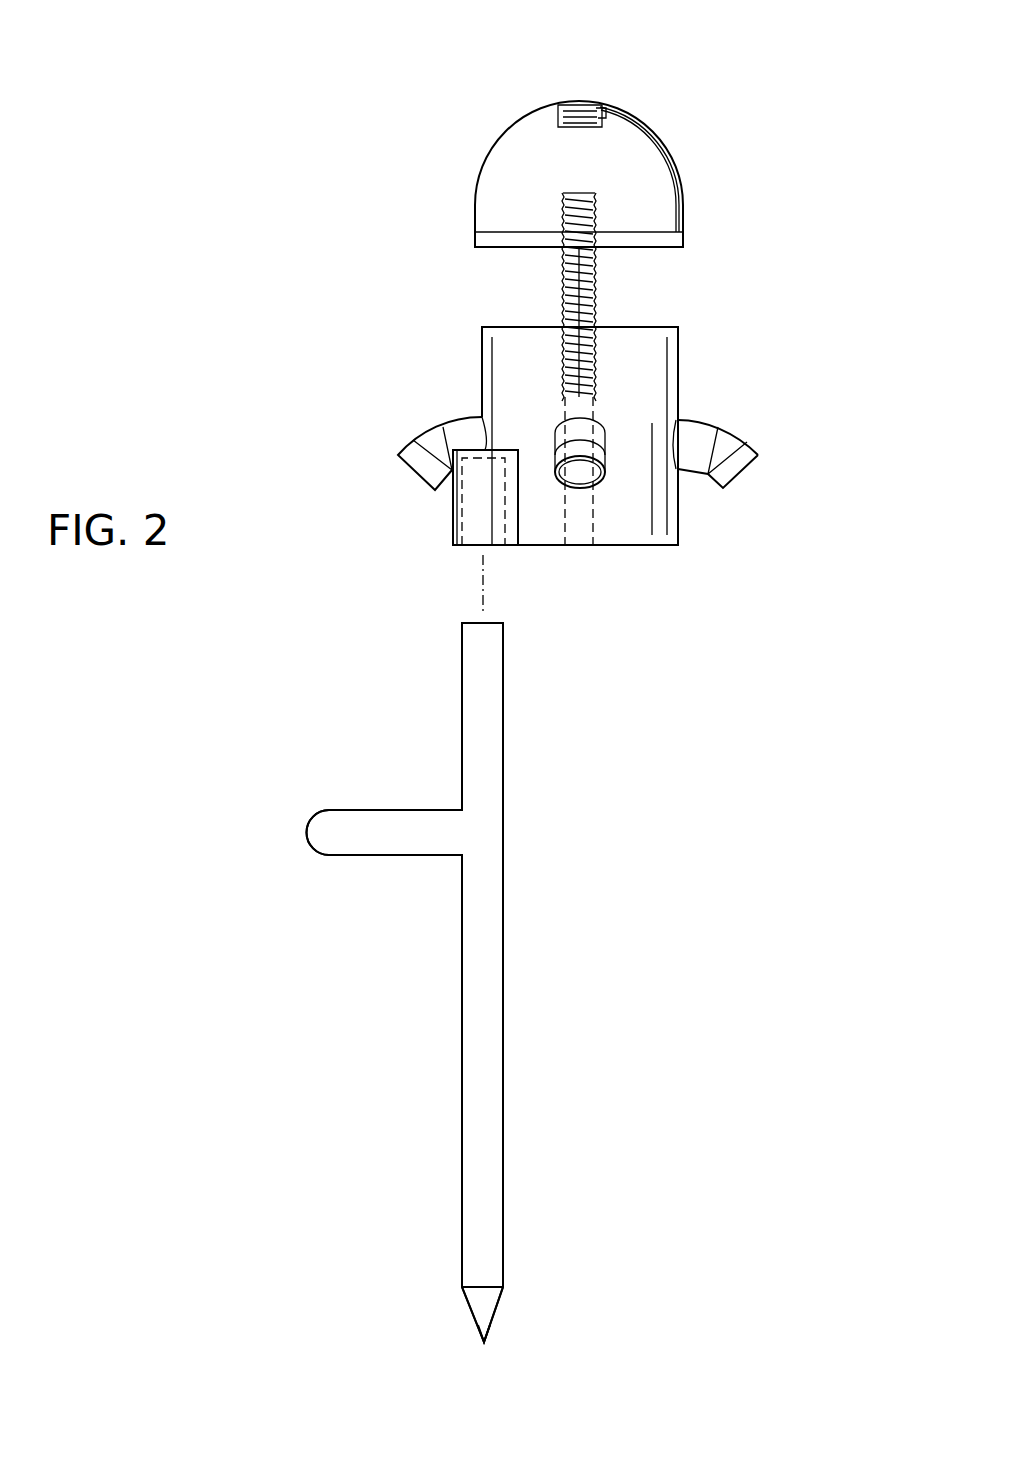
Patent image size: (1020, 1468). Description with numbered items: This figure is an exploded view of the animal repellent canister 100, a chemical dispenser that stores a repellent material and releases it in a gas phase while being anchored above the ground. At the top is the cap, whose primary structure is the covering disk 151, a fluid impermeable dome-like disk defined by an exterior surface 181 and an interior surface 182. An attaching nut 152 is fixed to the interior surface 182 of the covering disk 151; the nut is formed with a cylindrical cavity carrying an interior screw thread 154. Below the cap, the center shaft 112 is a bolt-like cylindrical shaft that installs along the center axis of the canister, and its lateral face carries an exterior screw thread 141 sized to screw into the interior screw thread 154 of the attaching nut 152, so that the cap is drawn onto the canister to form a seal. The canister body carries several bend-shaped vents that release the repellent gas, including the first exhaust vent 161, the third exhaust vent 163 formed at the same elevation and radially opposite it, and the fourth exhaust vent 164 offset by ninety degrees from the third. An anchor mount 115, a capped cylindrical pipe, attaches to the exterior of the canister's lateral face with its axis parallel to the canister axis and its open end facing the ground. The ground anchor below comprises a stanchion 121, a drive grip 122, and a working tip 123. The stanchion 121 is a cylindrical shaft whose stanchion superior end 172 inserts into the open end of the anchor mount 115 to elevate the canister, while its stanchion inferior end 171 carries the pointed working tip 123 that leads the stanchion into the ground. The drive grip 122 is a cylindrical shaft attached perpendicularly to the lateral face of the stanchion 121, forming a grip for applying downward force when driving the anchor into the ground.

The animal repellent canister 100 is at (166, 220).
The center shaft 112 is at (597, 268).
The anchor mount 115 is at (470, 510).
The stanchion 121 is at (490, 985).
The drive grip 122 is at (360, 838).
The working tip 123 is at (484, 1342).
The exterior screw thread 141 is at (590, 345).
The covering disk 151 is at (498, 137).
The attaching nut 152 is at (603, 112).
The interior screw thread 154 is at (574, 105).
The first exhaust vent 161 is at (744, 436).
The third exhaust vent 163 is at (433, 437).
The fourth exhaust vent 164 is at (600, 453).
The stanchion inferior end 171 is at (490, 623).
The stanchion superior end 172 is at (467, 1310).
The exterior surface 181 is at (678, 162).
The interior surface 182 is at (668, 178).